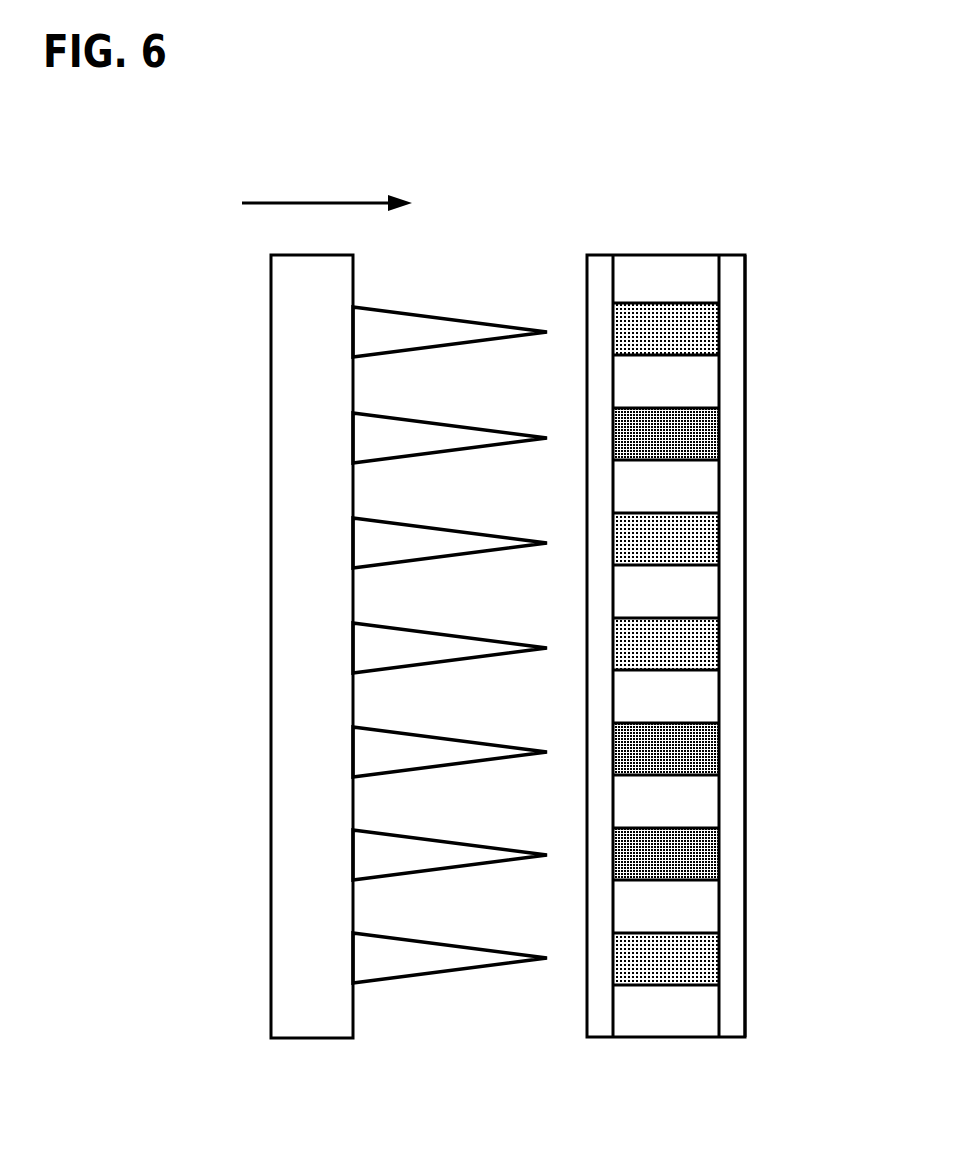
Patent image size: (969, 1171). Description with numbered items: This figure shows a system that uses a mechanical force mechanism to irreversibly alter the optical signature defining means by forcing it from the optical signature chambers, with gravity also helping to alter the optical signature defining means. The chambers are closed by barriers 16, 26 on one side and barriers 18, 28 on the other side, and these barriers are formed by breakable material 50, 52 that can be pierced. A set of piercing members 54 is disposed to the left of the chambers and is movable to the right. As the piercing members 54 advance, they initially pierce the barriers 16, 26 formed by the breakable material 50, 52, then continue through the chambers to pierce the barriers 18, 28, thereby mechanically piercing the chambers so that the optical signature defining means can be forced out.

The barrier 16 is at (568, 585).
The barrier 26 is at (596, 433).
The barrier 18 is at (805, 646).
The barrier 28 is at (732, 547).
The breakable material 50 is at (678, 641).
The breakable material 52 is at (732, 900).
The piercing members 54 is at (437, 962).